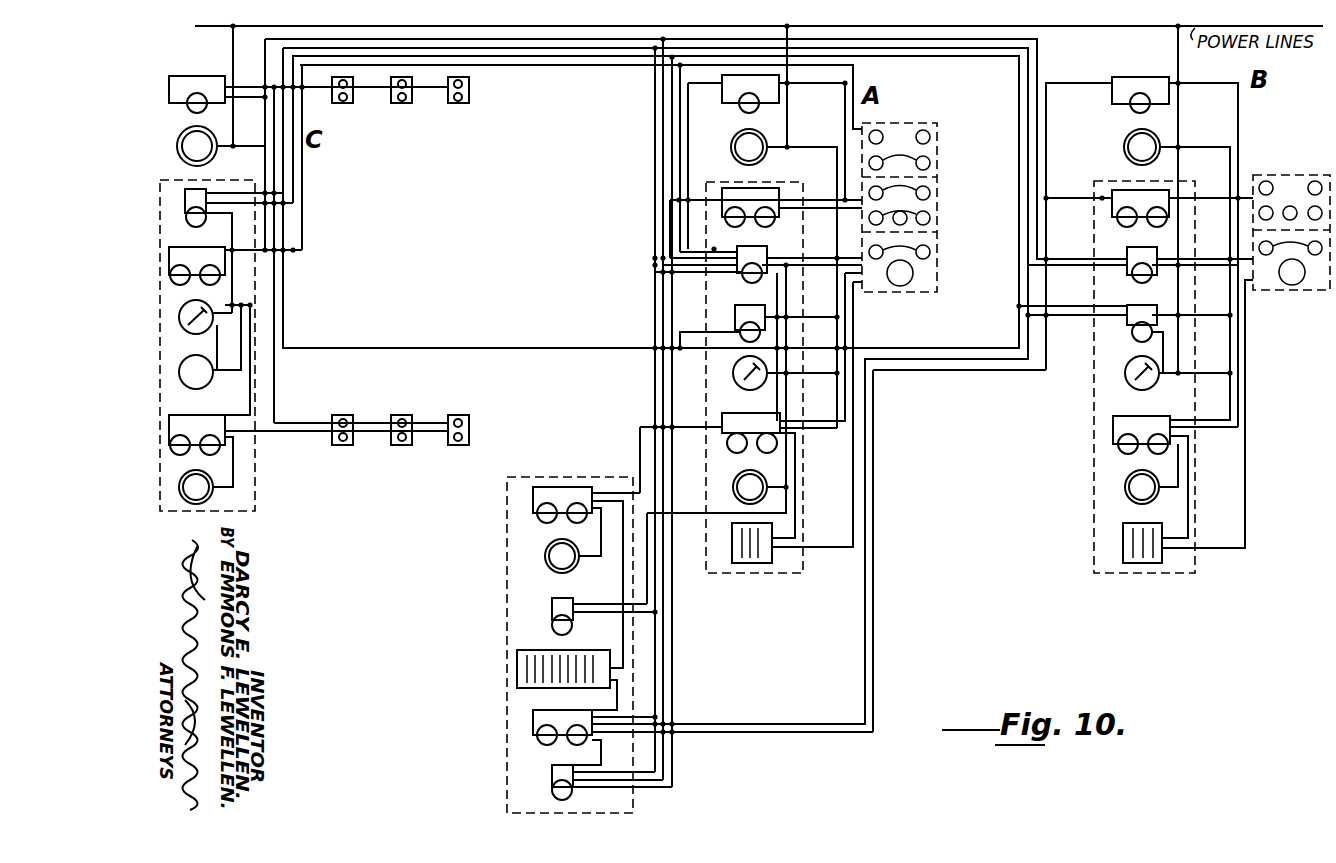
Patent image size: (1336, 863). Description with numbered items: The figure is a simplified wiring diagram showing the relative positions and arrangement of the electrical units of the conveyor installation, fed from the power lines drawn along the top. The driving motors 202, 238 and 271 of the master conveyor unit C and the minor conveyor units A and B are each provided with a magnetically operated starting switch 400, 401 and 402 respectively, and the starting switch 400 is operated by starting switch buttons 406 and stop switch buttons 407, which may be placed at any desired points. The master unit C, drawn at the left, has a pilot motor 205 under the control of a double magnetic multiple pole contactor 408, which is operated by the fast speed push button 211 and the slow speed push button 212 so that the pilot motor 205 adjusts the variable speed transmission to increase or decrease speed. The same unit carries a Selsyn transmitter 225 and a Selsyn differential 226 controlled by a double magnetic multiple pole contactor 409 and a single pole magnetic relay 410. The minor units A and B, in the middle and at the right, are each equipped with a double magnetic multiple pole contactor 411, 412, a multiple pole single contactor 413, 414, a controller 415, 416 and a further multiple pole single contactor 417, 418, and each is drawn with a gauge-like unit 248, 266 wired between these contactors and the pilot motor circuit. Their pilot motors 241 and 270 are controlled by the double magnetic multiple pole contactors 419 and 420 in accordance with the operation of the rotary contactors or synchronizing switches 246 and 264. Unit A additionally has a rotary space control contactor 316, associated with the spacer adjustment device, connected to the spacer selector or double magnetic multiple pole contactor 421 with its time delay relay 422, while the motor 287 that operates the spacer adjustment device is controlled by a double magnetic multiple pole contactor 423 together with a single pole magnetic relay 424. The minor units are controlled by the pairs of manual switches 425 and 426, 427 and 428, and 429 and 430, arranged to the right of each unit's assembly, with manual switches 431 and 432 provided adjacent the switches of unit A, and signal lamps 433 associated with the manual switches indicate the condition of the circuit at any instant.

The starting switch 400 is at (194, 81).
The driving motor 202 is at (182, 143).
The stop switch buttons 407 is at (411, 74).
The starting switch buttons 406 is at (476, 97).
The single pole magnetic relay 410 is at (196, 192).
The double magnetic multiple pole contactor 409 is at (208, 257).
The Selsyn transmitter 225 is at (203, 298).
The Selsyn differential 226 is at (192, 383).
The double magnetic multiple pole contactor 408 is at (214, 420).
The pilot motor 205 is at (200, 464).
The fast speed push button 211 is at (476, 423).
The slow speed push button 212 is at (476, 437).
The starting switch 401 is at (730, 94).
The driving motor 238 is at (732, 147).
The double magnetic multiple pole contactor 411 is at (736, 195).
The multiple pole single contactor 413 is at (759, 252).
The multiple pole single contactor 417 is at (741, 313).
The gauge switch 248 is at (733, 374).
The double magnetic multiple pole contactor 419 is at (754, 422).
The pilot motor 241 is at (736, 484).
The rotary contactor or synchronizing switch 246 is at (746, 566).
The double magnetic multiple pole contactor 423 is at (558, 492).
The motor 287 is at (550, 552).
The single pole magnetic relay 424 is at (552, 605).
The rotary space control contactor 316 is at (528, 642).
The spacer selector or double magnetic multiple pole contactor 421 is at (551, 718).
The time delay relay 422 is at (553, 776).
The signal lamps 433 is at (922, 130).
The manual switch 431 is at (884, 163).
The manual switch 432 is at (930, 170).
The manual switch 425 is at (884, 218).
The manual switch 429 is at (930, 219).
The manual switch 427 is at (905, 225).
The controller 415 is at (908, 271).
The starting switch 402 is at (1127, 86).
The driving motor 271 is at (1126, 144).
The double magnetic multiple pole contactor 412 is at (1117, 193).
The multiple pole single contactor 414 is at (1145, 255).
The multiple pole single contactor 418 is at (1132, 306).
The gauge switch 266 is at (1130, 372).
The double magnetic multiple pole contactor 420 is at (1150, 426).
The pilot motor 270 is at (1132, 478).
The rotary contactor or synchronizing switch 264 is at (1142, 566).
The manual switch 426 is at (1266, 206).
The manual switch 430 is at (1316, 206).
The manual switch 428 is at (1290, 206).
The controller 416 is at (1292, 286).